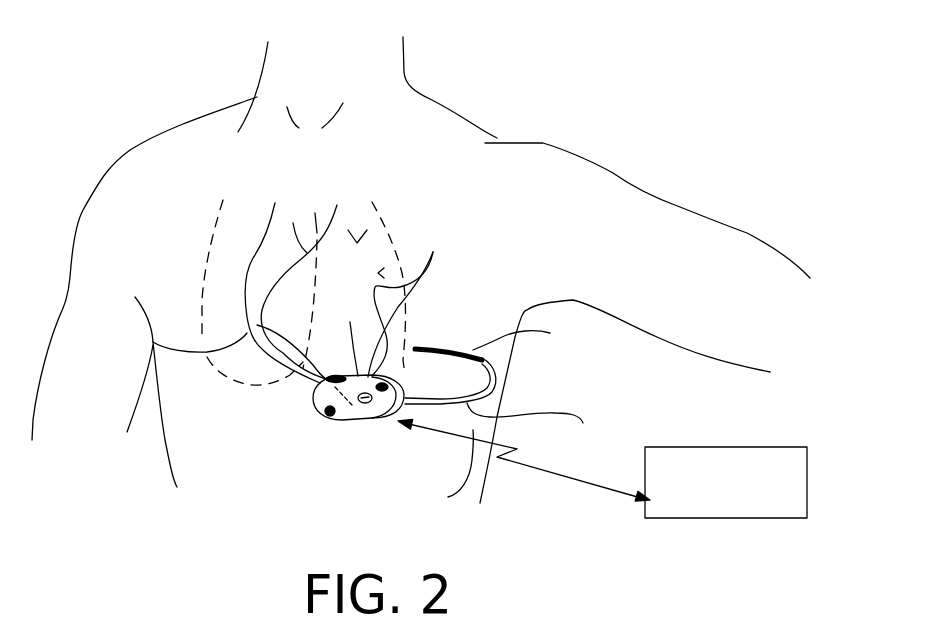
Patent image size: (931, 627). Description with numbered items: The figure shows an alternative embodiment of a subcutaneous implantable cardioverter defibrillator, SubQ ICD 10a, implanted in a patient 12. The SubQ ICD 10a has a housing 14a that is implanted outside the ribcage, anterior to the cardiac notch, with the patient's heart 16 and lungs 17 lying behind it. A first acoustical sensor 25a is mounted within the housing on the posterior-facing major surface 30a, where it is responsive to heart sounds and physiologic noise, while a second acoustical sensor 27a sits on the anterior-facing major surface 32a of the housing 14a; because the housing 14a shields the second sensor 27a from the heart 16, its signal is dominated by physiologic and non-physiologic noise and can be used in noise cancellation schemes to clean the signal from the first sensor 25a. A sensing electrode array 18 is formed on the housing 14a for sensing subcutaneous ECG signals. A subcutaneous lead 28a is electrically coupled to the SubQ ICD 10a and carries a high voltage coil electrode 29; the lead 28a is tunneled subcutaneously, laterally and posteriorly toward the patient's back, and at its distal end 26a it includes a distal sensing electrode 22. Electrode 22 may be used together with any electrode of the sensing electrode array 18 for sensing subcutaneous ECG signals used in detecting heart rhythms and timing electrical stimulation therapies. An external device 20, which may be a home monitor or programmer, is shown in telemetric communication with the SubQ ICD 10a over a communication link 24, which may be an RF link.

The SubQ ICD 10a is at (357, 433).
The patient 12 is at (545, 142).
The housing 14a is at (313, 392).
The heart 16 is at (347, 255).
The lungs 17 is at (200, 258).
The sensing electrode array 18 is at (257, 325).
The external device 20 is at (693, 510).
The distal sensing electrode 22 is at (415, 349).
The communication link 24 is at (444, 471).
The first acoustical sensor 25a is at (412, 302).
The electrode loop 26a is at (468, 323).
The second acoustical sensor 27a is at (333, 416).
The subcutaneous lead 28a is at (535, 429).
The high voltage coil electrode 29 is at (529, 338).
The lead 30a is at (342, 337).
The header 32a is at (312, 388).